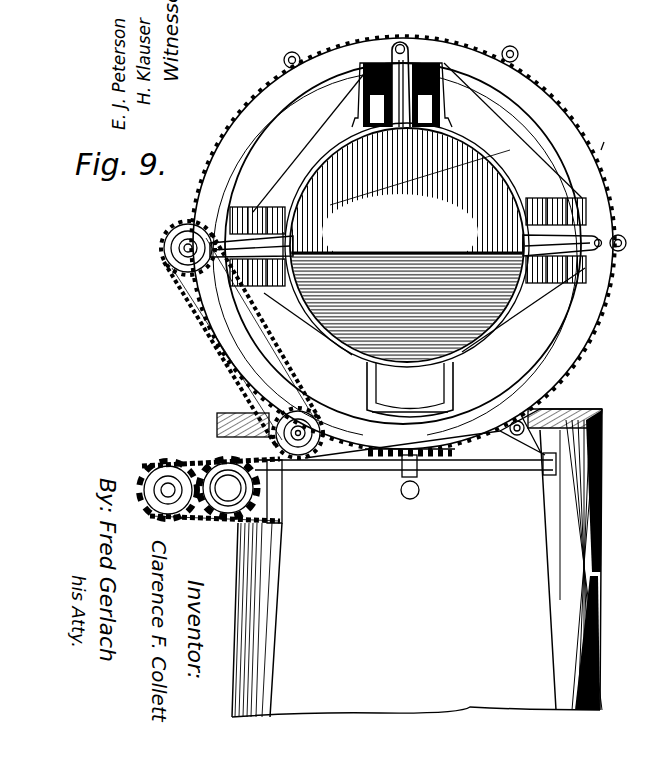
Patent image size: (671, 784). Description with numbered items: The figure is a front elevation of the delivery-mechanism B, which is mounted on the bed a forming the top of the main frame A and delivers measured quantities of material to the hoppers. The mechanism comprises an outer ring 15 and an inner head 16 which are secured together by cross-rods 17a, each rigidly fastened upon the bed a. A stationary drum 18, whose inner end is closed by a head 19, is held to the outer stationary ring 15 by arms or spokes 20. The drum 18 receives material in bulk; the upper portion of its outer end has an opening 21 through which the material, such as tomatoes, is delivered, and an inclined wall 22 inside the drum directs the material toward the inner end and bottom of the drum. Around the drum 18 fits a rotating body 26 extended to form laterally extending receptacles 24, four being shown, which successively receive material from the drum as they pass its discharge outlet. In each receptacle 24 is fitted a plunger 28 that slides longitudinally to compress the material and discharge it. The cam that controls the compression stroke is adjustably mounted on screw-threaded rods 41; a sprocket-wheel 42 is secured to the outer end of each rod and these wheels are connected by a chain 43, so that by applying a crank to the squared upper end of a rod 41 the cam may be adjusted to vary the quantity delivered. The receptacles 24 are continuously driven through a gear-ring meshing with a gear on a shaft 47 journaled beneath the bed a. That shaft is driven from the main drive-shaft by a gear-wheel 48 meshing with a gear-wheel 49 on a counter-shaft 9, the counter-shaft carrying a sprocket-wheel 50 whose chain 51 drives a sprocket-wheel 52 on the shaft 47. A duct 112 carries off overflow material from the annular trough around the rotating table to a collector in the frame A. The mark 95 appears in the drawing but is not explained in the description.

The counter-shaft 9 is at (170, 510).
The outer ring 15 is at (600, 345).
The inner head 16 is at (420, 468).
The cross-rods 17a is at (545, 410).
The stationary drum 18 is at (510, 310).
The head 19 is at (340, 172).
The arms or spokes 20 is at (395, 58).
The opening 21 is at (425, 167).
The inclined wall 22 is at (428, 272).
The rotating receptacles 24 is at (360, 80).
The body 26 is at (508, 180).
The plunger 28 is at (446, 110).
The screw-threaded rods 41 is at (182, 240).
The sprocket-wheel 42 is at (178, 255).
The chain 43 is at (195, 315).
The shaft 47 is at (402, 497).
The gear-wheel 48 is at (222, 522).
The gear-wheel 49 is at (172, 462).
The sprocket-wheel 50 is at (160, 480).
The chain 51 is at (281, 525).
The sprocket-wheel 52 is at (395, 462).
The ring rim 95 is at (608, 134).
The duct 112 is at (570, 568).
The frame A is at (595, 505).
The delivery-mechanism B is at (397, 252).
The bed or table a is at (488, 472).